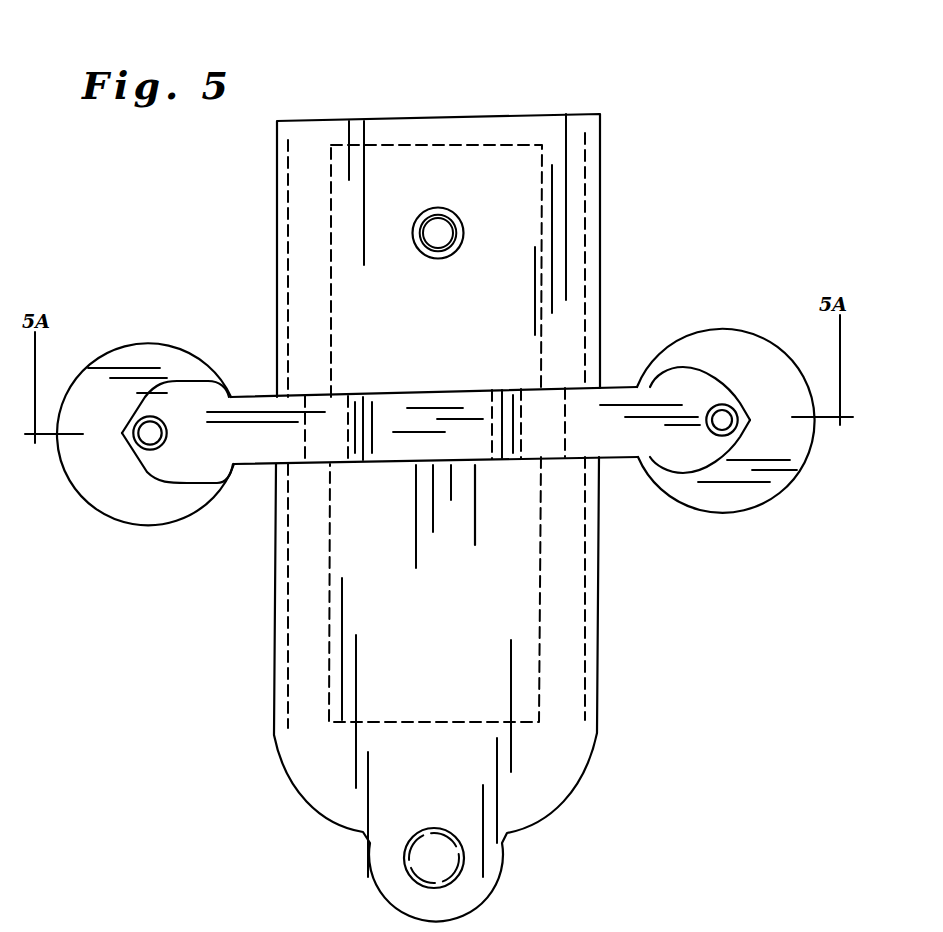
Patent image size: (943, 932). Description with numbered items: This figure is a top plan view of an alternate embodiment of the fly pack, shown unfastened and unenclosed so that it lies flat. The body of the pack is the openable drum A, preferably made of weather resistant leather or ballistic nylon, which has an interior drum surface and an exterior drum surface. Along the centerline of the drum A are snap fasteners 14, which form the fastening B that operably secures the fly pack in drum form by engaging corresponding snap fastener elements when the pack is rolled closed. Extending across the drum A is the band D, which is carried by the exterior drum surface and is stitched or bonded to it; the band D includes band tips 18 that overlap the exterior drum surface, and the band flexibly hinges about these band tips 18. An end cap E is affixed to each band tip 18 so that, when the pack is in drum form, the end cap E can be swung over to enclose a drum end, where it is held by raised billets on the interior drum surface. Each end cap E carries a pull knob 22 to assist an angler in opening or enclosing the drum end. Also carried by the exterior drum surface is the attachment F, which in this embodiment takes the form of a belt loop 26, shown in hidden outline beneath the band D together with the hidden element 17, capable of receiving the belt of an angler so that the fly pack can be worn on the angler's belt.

The snap fasteners 14 is at (437, 227).
The mounting plate 17 is at (414, 145).
The band tip 18 is at (675, 397).
The pull knob 22 is at (722, 420).
The belt loop 26 is at (418, 397).
The drum A is at (600, 116).
The fastening B is at (445, 208).
The band D is at (263, 447).
The end cap E is at (757, 360).
The attachment F is at (475, 545).